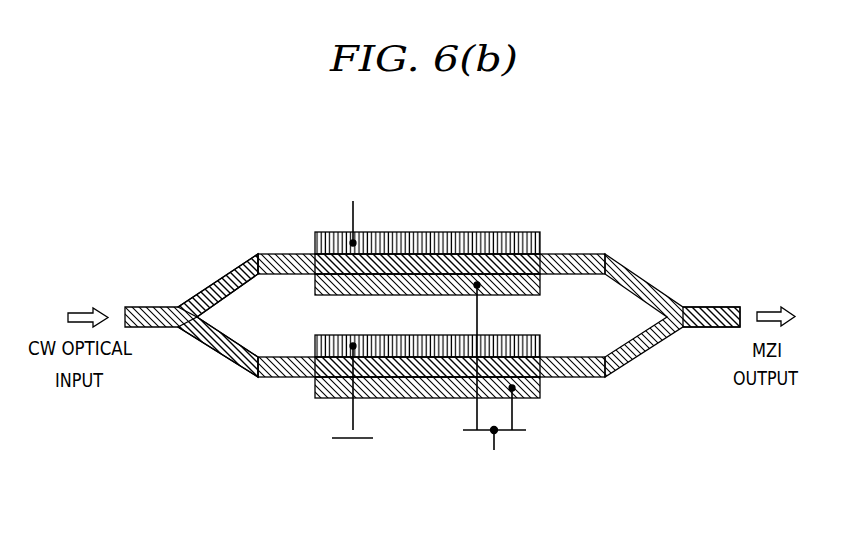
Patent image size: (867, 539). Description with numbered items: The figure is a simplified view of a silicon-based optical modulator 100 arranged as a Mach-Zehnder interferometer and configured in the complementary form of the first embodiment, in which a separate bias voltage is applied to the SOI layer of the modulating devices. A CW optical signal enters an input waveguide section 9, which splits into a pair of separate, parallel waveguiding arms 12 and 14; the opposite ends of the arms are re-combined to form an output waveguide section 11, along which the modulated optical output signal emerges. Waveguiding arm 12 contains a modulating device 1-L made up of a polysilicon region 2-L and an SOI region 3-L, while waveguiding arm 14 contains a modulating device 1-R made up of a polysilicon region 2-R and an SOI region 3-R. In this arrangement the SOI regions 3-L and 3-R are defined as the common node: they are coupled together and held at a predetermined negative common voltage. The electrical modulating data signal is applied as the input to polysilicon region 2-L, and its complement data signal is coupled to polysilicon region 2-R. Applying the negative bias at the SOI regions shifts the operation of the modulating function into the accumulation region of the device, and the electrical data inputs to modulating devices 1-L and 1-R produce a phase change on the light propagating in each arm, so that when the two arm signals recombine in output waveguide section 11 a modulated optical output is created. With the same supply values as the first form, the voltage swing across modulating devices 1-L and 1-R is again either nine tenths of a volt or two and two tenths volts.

The silicon-based optical modulator 100 is at (191, 188).
The input waveguide section 9 is at (152, 305).
The waveguiding arm 12 is at (232, 272).
The waveguiding arm 14 is at (226, 356).
The output waveguide section 11 is at (712, 305).
The modulating device 1-L is at (550, 245).
The modulating device 1-R is at (550, 387).
The polysilicon region 2-L is at (322, 244).
The SOI region 3-L is at (322, 285).
The polysilicon region 2-R is at (318, 346).
The SOI region 3-R is at (322, 386).